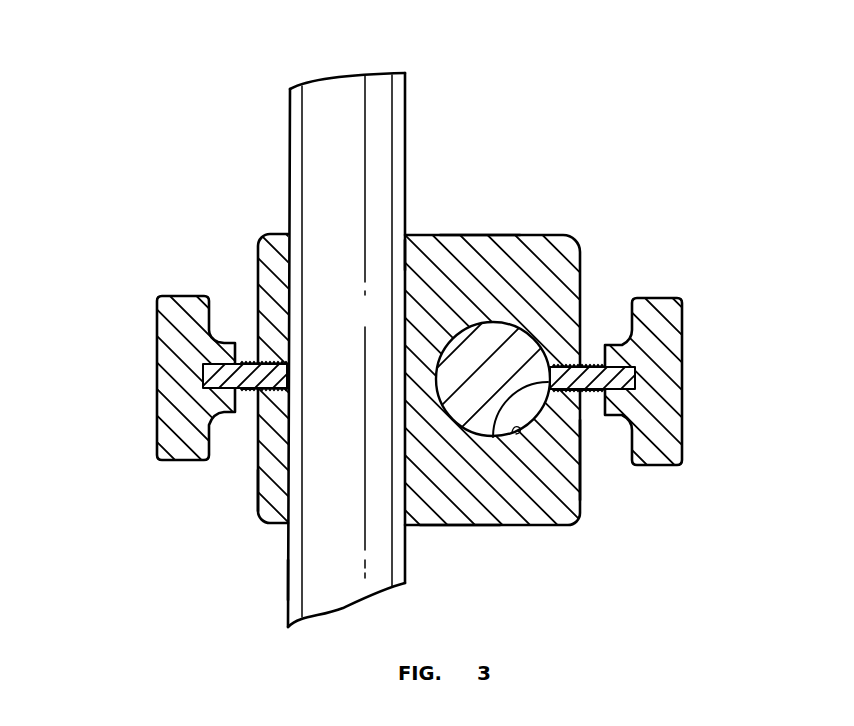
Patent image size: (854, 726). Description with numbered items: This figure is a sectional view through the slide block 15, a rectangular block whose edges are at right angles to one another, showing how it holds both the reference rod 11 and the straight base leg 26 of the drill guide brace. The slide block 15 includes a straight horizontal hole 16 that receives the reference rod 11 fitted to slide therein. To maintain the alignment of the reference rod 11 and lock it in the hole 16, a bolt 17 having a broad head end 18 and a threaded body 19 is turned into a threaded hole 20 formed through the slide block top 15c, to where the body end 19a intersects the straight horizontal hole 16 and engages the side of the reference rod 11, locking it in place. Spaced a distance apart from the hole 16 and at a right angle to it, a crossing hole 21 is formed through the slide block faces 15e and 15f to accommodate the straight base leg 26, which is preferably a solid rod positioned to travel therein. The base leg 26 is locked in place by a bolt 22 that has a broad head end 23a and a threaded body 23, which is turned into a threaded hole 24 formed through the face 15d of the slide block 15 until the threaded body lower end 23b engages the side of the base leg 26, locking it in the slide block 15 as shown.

The straight base leg 26 is at (317, 140).
The crossing hole 21 is at (403, 253).
The bolt 22 is at (240, 250).
The threaded body 23 is at (255, 360).
The broad head end 23a is at (160, 352).
The threaded body lower end 23b is at (288, 583).
The threaded hole 24 is at (262, 494).
The slide block 15 is at (557, 243).
The slide block face 15f is at (470, 235).
The slide block top 15c is at (580, 464).
The slide block face 15e is at (458, 530).
The slide block face 15d is at (258, 388).
The reference rod 11 is at (503, 355).
The threaded hole 20 is at (581, 366).
The threaded body 19 is at (594, 365).
The body end 19a is at (497, 437).
The straight horizontal hole 16 is at (510, 428).
The bolt 17 is at (690, 373).
The broad head end 18 is at (679, 416).